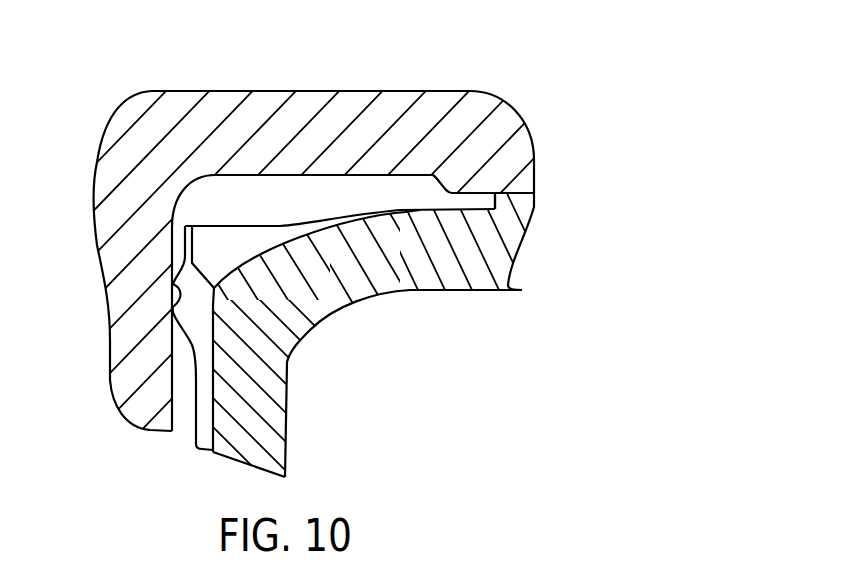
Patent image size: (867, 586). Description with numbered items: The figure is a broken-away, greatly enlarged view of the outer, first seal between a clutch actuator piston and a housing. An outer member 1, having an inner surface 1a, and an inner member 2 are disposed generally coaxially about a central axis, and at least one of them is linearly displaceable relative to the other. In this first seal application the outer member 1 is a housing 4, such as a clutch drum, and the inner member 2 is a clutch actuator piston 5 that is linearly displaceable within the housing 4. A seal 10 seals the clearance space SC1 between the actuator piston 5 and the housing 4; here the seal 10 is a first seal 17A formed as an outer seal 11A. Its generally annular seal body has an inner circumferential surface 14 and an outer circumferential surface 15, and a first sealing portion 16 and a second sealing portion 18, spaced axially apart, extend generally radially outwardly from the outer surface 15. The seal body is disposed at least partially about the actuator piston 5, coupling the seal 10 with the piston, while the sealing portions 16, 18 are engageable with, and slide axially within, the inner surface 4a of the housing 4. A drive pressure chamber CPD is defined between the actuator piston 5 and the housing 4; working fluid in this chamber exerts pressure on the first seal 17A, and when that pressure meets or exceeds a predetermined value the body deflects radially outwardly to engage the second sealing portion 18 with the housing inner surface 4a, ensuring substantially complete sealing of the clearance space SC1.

The outer member 1 is at (256, 70).
The inner surface 1a is at (187, 362).
The inner member 2 is at (467, 335).
The housing 4 is at (178, 87).
The inner surface of the housing 4a is at (208, 405).
The clutch actuator piston 5 is at (371, 302).
The seal 10 is at (139, 205).
The outer seal 11A is at (231, 215).
The inner circumferential surface 14 is at (215, 337).
The outer circumferential surface 15 is at (176, 291).
The first sealing portion 16 is at (163, 266).
The first seal 17A is at (251, 224).
The second sealing portion 18 is at (162, 309).
The clearance space SC1 is at (187, 391).
The drive pressure chamber CPD is at (350, 192).